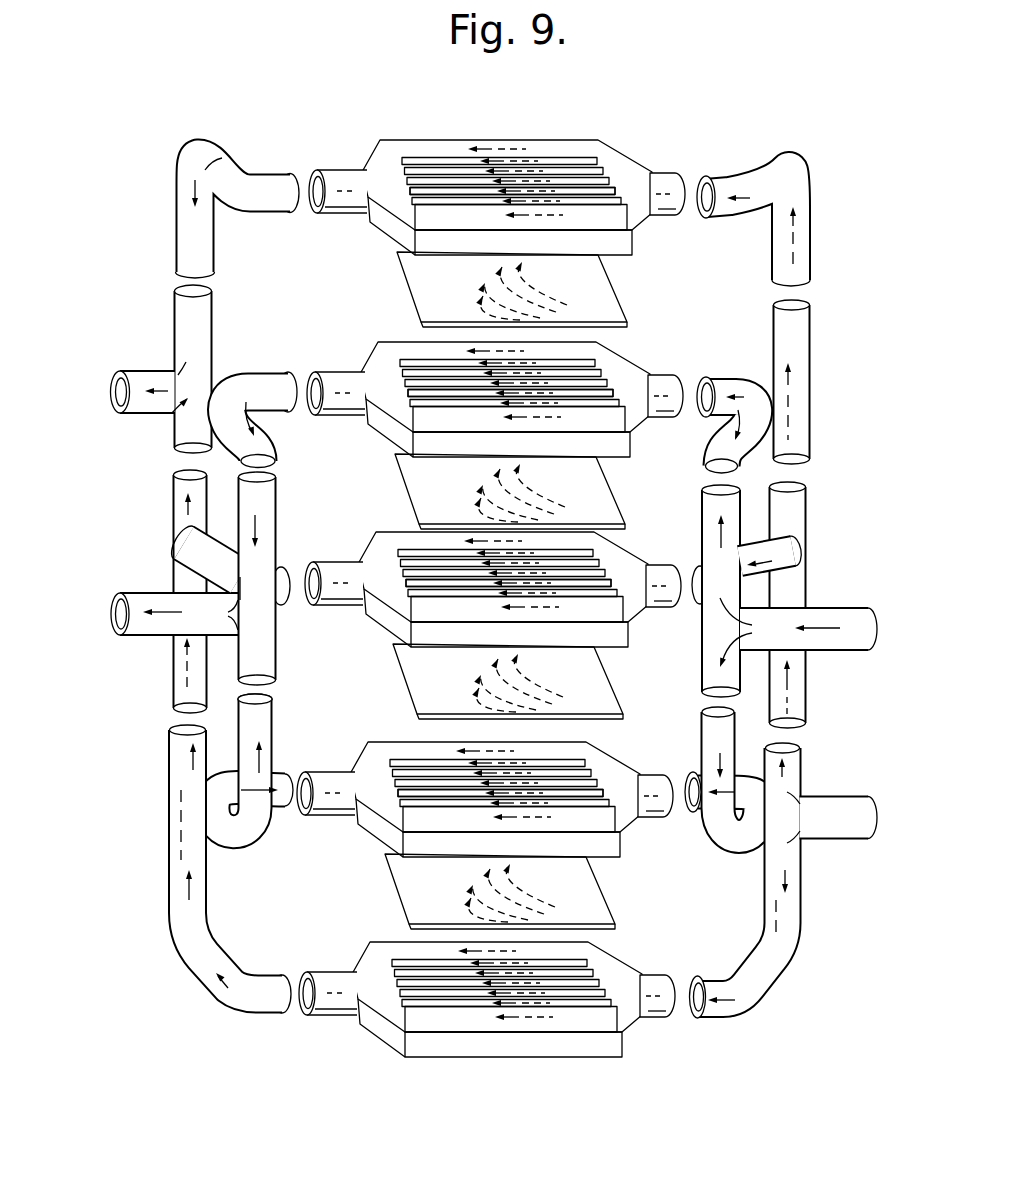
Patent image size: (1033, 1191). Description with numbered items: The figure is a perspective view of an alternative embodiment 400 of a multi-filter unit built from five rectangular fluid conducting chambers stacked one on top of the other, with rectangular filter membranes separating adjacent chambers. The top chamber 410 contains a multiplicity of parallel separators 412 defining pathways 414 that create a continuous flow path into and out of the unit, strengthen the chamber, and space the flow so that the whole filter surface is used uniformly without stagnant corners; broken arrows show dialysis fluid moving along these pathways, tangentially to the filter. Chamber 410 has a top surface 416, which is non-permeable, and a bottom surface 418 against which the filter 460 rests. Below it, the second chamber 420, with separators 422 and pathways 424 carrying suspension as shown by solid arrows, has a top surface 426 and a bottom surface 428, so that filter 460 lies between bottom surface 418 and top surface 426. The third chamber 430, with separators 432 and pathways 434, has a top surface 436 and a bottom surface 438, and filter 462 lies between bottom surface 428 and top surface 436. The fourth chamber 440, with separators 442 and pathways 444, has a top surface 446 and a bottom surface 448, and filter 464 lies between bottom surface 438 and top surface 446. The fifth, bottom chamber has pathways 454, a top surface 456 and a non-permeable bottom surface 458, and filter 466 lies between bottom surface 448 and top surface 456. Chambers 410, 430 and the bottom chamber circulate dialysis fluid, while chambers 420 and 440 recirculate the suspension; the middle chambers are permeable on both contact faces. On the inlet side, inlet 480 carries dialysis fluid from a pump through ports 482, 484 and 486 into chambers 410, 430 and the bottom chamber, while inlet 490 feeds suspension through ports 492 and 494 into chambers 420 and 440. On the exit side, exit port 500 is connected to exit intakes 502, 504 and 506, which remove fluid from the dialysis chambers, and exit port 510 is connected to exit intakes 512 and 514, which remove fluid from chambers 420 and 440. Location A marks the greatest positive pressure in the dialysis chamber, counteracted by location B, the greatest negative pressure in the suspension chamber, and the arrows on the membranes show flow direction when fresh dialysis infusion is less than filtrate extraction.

The alternative embodiment 400 is at (834, 296).
The fluid conducting chamber 410 is at (509, 188).
The separators 412 is at (593, 158).
The pathways 414 is at (603, 190).
The top surface 416 is at (399, 146).
The bottom surface 418 is at (392, 237).
The second fluid conducting chamber 420 is at (520, 395).
The separators 422 is at (598, 366).
The pathways 424 is at (640, 433).
The top surface 426 is at (377, 351).
The bottom surface 428 is at (391, 437).
The third fluid conducting chamber 430 is at (498, 588).
The separators 432 is at (622, 568).
The pathways 434 is at (612, 635).
The top surface 436 is at (374, 545).
The bottom surface 438 is at (390, 628).
The fourth fluid conducting chamber 440 is at (492, 808).
The separators 442 is at (598, 763).
The pathways 444 is at (612, 840).
The top surface 446 is at (350, 763).
The bottom surface 448 is at (376, 850).
The pathways 454 is at (622, 1048).
The top surface 456 is at (368, 955).
The bottom surface 458 is at (378, 1042).
The filter 460 is at (602, 292).
The filter 462 is at (605, 495).
The filter 464 is at (604, 692).
The filter 466 is at (598, 892).
The inlet 480 is at (845, 807).
The port 482 is at (788, 170).
The port 484 is at (698, 592).
The port 486 is at (703, 1017).
The inlet 490 is at (851, 616).
The port 492 is at (717, 383).
The port 494 is at (690, 818).
The exit port 500 is at (115, 373).
The exit intake 502 is at (280, 175).
The exit intake 504 is at (281, 565).
The exit intake 506 is at (268, 982).
The exit port 510 is at (118, 636).
The exit intake 512 is at (277, 387).
The exit intake 514 is at (275, 838).